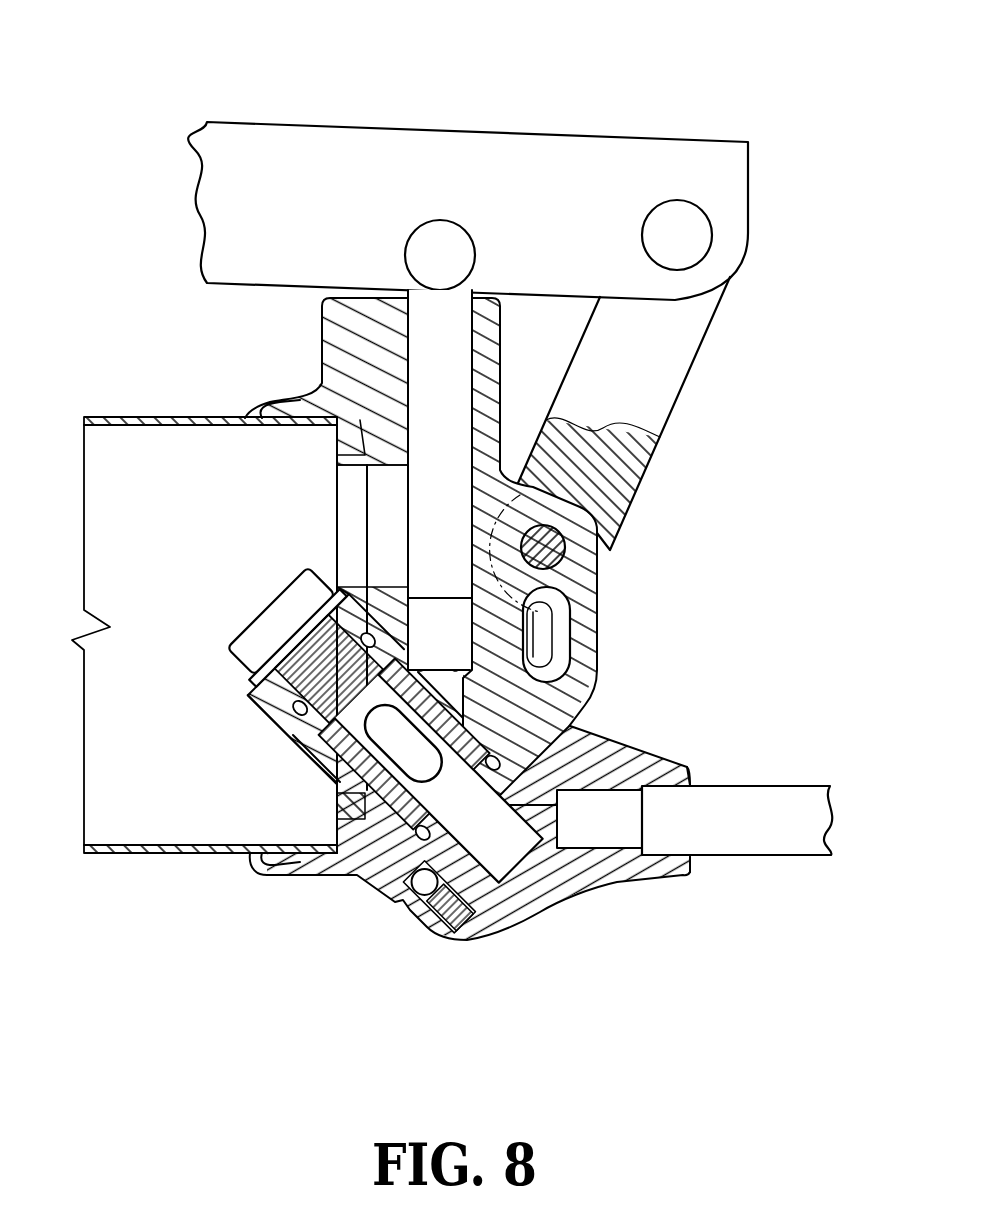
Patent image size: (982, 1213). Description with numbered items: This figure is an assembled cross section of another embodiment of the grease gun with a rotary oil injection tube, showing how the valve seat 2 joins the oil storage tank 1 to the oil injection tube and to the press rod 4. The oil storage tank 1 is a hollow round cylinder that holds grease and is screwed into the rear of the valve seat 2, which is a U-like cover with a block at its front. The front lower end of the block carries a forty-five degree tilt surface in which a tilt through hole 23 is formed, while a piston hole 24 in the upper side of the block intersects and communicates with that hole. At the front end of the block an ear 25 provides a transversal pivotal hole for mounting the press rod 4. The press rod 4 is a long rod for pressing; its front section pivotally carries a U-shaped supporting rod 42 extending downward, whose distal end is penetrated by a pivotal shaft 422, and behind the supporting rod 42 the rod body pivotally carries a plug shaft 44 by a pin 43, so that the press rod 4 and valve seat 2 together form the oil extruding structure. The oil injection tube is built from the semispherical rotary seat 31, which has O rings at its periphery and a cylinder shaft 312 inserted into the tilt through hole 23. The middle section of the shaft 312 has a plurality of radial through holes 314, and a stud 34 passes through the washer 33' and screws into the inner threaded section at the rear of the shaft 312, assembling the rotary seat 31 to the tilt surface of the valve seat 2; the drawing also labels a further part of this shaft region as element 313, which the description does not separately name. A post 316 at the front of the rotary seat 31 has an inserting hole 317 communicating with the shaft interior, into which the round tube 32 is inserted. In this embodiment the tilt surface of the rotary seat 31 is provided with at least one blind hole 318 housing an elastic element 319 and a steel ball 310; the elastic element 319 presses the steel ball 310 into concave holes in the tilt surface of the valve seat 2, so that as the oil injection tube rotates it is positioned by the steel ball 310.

The oil storage tank 1 is at (140, 835).
The valve seat 2 is at (272, 398).
The press rod 4 is at (292, 125).
The tilt through hole 23 is at (500, 727).
The piston hole 24 is at (462, 640).
The ear 25 is at (592, 586).
The rotary seat 31 is at (557, 913).
The round tube 32 is at (792, 800).
The washer 33' is at (250, 675).
The stud 34 is at (258, 628).
The supporting rod 42 is at (685, 357).
The pin 43 is at (437, 225).
The plug shaft 44 is at (418, 352).
The steel ball 310 is at (410, 913).
The shaft 312 is at (335, 765).
The threaded portion 313 is at (315, 740).
The radial through holes 314 is at (405, 752).
The post 316 is at (683, 870).
The inserting hole 317 is at (633, 873).
The blind hole 318 is at (482, 917).
The elastic element 319 is at (458, 920).
The pivotal shaft 422 is at (550, 548).